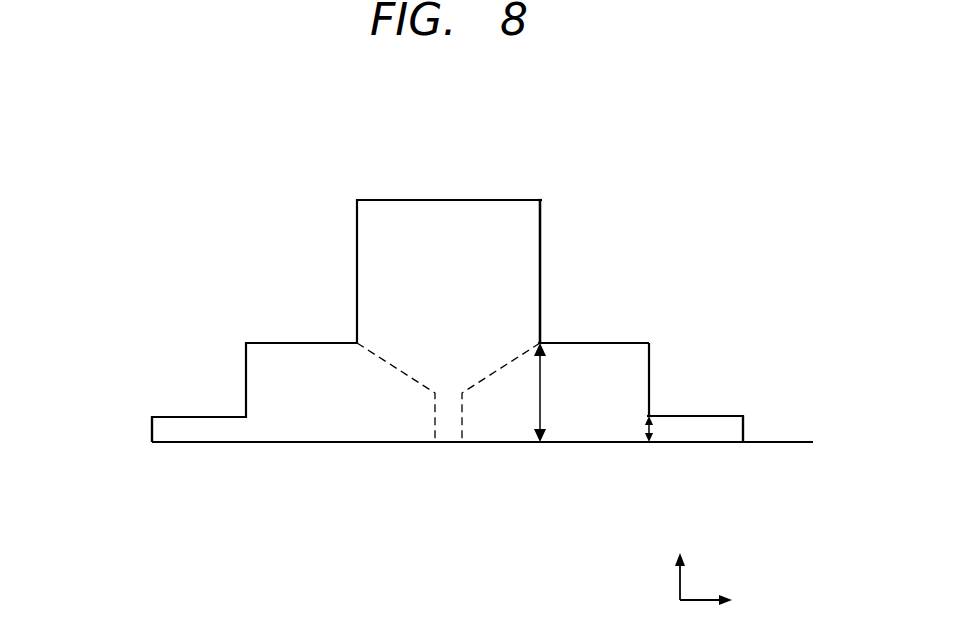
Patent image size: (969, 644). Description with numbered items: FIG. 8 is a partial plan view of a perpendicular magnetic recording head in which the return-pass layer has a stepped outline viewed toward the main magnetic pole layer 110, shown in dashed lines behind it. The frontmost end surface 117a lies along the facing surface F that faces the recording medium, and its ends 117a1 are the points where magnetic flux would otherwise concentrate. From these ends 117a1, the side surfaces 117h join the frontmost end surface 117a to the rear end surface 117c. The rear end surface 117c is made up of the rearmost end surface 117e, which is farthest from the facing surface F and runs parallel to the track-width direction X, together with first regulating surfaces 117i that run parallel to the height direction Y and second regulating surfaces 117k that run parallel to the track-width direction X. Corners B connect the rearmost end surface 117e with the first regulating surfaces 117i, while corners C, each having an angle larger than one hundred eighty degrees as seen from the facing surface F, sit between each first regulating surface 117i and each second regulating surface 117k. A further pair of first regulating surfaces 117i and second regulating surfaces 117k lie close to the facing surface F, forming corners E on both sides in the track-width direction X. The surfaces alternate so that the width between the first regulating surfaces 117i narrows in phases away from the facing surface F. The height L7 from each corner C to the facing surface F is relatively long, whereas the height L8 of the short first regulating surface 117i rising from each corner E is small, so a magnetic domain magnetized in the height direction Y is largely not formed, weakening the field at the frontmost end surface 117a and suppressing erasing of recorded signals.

The main magnetic pole layer 110 is at (520, 225).
The frontmost end surface 117a is at (342, 442).
The ends of the frontmost end surface 117a1 is at (152, 442).
The rear end surface 117c is at (395, 184).
The rearmost end surface 117e is at (450, 200).
The side surfaces 117h is at (152, 427).
The first regulating surfaces 117i is at (540, 260).
The second regulating surfaces 117k is at (625, 343).
The corners B is at (540, 200).
The corners C is at (541, 342).
The corners E is at (649, 413).
The facing surface F is at (575, 487).
The height L7 is at (538, 400).
The height L8 is at (651, 420).
The track-width direction X is at (715, 600).
The height direction Y is at (679, 560).